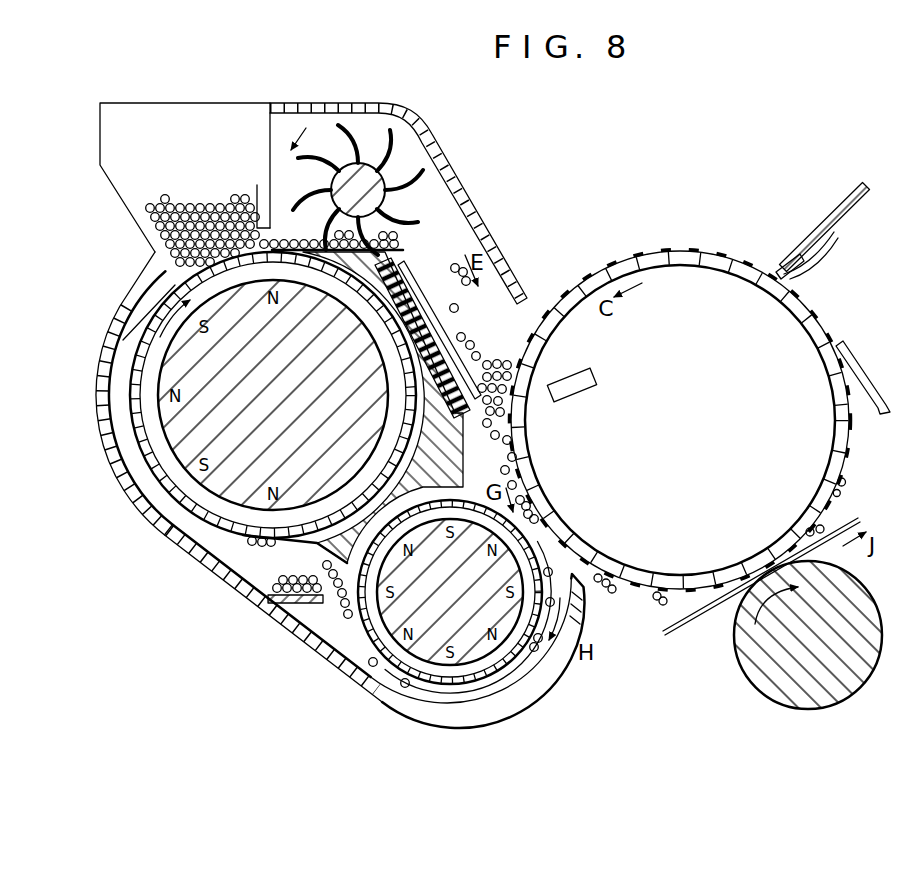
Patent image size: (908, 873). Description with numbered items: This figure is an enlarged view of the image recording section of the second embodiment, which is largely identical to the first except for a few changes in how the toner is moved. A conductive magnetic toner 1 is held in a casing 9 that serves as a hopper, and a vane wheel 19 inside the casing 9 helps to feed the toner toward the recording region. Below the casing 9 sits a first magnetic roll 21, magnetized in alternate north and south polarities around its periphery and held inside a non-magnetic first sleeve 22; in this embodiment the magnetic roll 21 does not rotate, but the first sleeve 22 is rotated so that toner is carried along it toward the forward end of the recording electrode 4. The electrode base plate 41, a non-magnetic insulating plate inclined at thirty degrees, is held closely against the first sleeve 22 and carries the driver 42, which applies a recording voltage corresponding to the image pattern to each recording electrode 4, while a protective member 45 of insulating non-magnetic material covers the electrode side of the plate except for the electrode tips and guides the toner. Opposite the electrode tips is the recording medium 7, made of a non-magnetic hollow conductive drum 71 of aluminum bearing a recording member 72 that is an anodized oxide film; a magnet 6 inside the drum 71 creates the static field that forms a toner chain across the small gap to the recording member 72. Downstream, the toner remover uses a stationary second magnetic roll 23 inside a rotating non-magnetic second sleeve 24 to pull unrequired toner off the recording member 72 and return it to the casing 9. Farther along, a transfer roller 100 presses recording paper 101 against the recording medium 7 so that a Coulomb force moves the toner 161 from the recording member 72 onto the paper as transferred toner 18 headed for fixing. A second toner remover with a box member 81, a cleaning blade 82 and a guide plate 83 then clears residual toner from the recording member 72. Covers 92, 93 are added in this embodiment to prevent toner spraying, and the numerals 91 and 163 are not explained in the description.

The conductive magnetic toner 1 is at (150, 237).
The recording electrode 4 is at (478, 376).
The magnet 6 is at (593, 393).
The recording medium 7 is at (650, 249).
The casing 9 is at (210, 104).
The transferred toner 18 is at (852, 524).
The vane wheel 19 is at (358, 164).
The first magnetic roll 21 is at (134, 492).
The first sleeve 22 is at (192, 512).
The second magnetic roll 23 is at (462, 729).
The second sleeve 24 is at (516, 666).
The electrode base plate 41 is at (398, 270).
The driver 42 is at (424, 306).
The protective member 45 is at (463, 347).
The drum 71 is at (712, 266).
The recording member 72 is at (682, 250).
The box member 81 is at (838, 208).
The cleaning blade 82 is at (795, 264).
The guide plate 83 is at (848, 361).
The hopper wall 91 is at (272, 210).
The cover 92 is at (422, 133).
The cover 93 is at (368, 693).
The transfer roller 100 is at (760, 681).
The recording paper 101 is at (694, 627).
The toner on recording member 161 is at (598, 586).
The carrier particle 163 is at (846, 484).